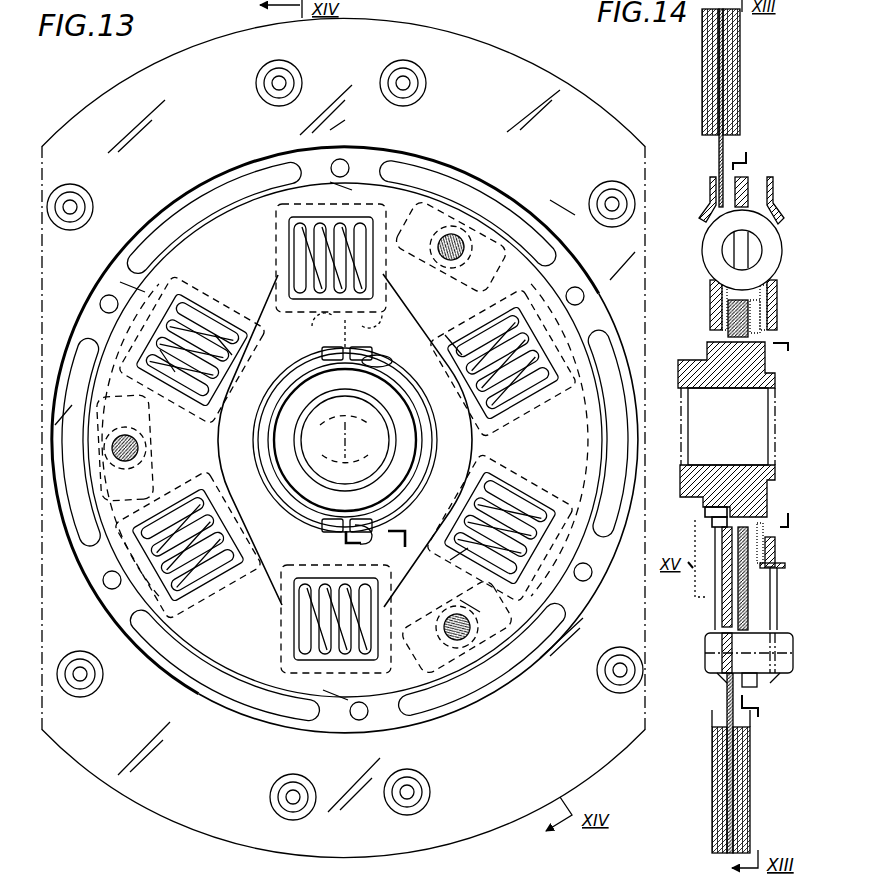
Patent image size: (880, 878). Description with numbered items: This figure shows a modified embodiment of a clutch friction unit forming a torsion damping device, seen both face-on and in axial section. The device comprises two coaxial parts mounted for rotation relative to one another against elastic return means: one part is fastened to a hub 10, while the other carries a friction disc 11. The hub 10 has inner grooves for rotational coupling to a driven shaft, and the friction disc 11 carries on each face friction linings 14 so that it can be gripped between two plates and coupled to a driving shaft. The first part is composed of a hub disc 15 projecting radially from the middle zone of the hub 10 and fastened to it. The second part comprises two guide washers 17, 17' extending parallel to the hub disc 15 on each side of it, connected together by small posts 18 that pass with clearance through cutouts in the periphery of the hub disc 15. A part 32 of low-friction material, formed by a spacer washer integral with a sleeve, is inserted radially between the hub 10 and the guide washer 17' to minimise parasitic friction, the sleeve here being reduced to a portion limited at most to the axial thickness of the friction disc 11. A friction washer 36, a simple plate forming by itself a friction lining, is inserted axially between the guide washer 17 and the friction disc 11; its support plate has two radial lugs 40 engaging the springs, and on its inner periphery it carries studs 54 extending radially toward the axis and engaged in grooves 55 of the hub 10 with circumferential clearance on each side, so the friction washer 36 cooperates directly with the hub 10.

In FIG. 13, the hub 10 is at (420, 431).
In FIG. 14, the hub 10 is at (700, 358).
In FIG. 13, the friction disc 11 is at (222, 262).
In FIG. 14, the friction disc 11 is at (716, 162).
In FIG. 13, the friction linings 14 is at (105, 100).
In FIG. 14, the friction linings 14 is at (702, 50).
In FIG. 14, the hub disc 15 is at (741, 178).
In FIG. 14, the guide washer 17 is at (694, 194).
In FIG. 14, the guide washer 17' is at (786, 195).
In FIG. 13, the small posts 18 is at (450, 263).
In FIG. 14, the small posts 18 is at (703, 642).
In FIG. 14, the part 32 is at (728, 318).
In FIG. 14, the friction washer 36 is at (723, 557).
In FIG. 13, the radial lugs 40 is at (366, 266).
In FIG. 13, the studs 54 is at (343, 352).
In FIG. 14, the studs 54 is at (720, 522).
In FIG. 13, the grooves 55 is at (372, 359).
In FIG. 14, the grooves 55 is at (703, 509).